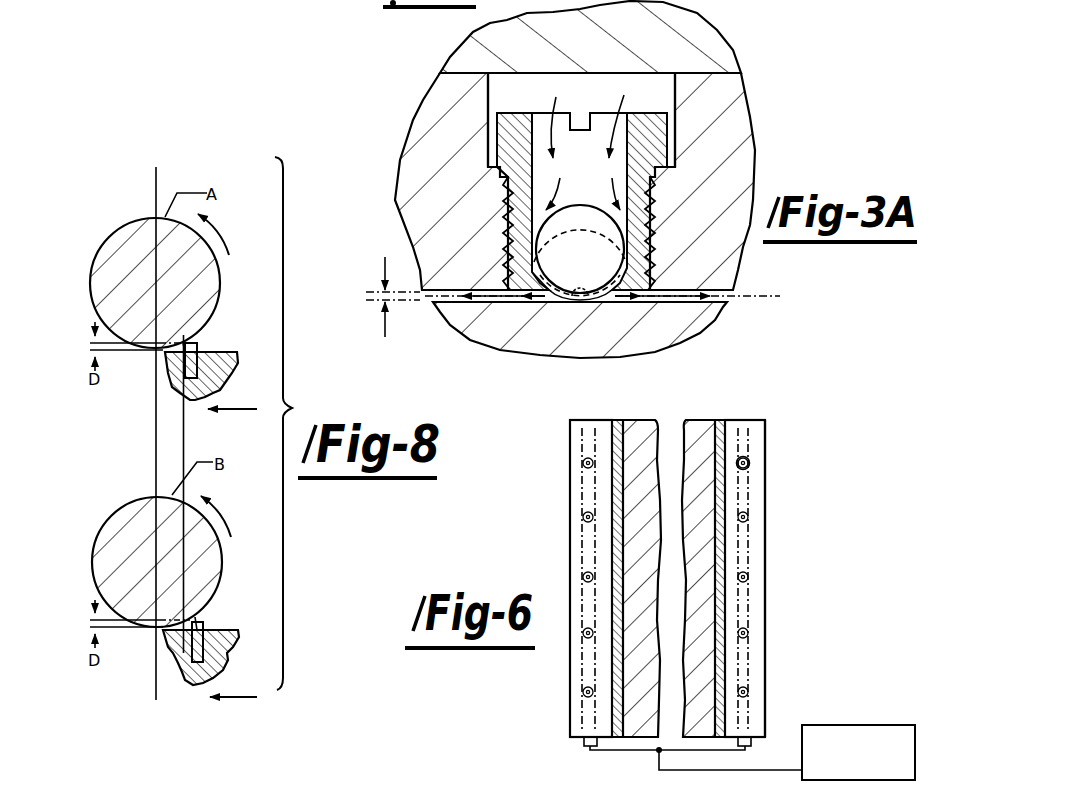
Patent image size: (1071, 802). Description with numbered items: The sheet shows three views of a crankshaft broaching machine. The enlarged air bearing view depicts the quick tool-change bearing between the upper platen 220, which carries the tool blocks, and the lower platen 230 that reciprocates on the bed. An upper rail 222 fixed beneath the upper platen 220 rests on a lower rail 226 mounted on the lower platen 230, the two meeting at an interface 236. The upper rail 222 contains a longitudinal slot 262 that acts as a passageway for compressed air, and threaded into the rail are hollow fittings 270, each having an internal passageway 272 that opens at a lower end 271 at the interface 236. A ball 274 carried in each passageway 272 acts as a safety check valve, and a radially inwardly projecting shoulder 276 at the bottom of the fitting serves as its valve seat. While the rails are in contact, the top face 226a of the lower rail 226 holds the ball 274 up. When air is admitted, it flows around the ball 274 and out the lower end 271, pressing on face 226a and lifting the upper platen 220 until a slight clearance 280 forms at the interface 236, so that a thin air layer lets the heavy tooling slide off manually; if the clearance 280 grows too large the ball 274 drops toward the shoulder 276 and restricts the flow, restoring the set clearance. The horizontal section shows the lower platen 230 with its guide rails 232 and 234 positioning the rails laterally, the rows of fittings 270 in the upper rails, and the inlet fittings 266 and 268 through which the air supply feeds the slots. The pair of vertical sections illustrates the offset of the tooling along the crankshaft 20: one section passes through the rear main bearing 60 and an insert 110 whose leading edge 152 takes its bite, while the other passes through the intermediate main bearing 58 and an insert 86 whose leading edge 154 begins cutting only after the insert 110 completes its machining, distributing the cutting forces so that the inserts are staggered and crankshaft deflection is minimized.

In FIG. 3A, the upper platen 220 is at (700, 36).
In FIG. 6, the upper platen 220 is at (763, 593).
In FIG. 3A, the upper rail 222 is at (740, 207).
In FIG. 6, the upper rail 222 is at (760, 543).
In FIG. 3A, the longitudinal slot 262 is at (668, 92).
In FIG. 6, the longitudinal slot 262 is at (745, 420).
In FIG. 3A, the hollow fittings 270 is at (656, 143).
In FIG. 6, the hollow fittings 270 is at (582, 517).
In FIG. 3A, the passageway 272 is at (660, 170).
In FIG. 3A, the ball 274 is at (600, 258).
In FIG. 3A, the interface 236 is at (727, 297).
In FIG. 3A, the radially inwardly projecting shoulder 276 is at (693, 328).
In FIG. 3A, the lower rail 226 is at (688, 338).
In FIG. 3A, the top face of rail 226 226a is at (613, 291).
In FIG. 3A, the lower open end 271 is at (577, 292).
In FIG. 6, the lower open end 271 is at (749, 460).
In FIG. 3A, the clearance 280 is at (372, 300).
In FIG. 6, the guide rail 234 is at (623, 417).
In FIG. 6, the lower platen 230 is at (690, 447).
In FIG. 6, the guide rail 232 is at (723, 420).
In FIG. 6, the inlet fitting 266 is at (745, 750).
In FIG. 6, the inlet fitting 268 is at (585, 745).
In FIG. 8, the rear main bearing 60 is at (113, 232).
In FIG. 8, the crankshaft 20 is at (80, 293).
In FIG. 8, the leading edge 152 is at (183, 343).
In FIG. 8, the roughing inserts 110 is at (197, 343).
In FIG. 8, the fourth main bearing 58 is at (93, 548).
In FIG. 8, the leading edge 154 is at (195, 617).
In FIG. 8, the roughing inserts 86 is at (207, 622).